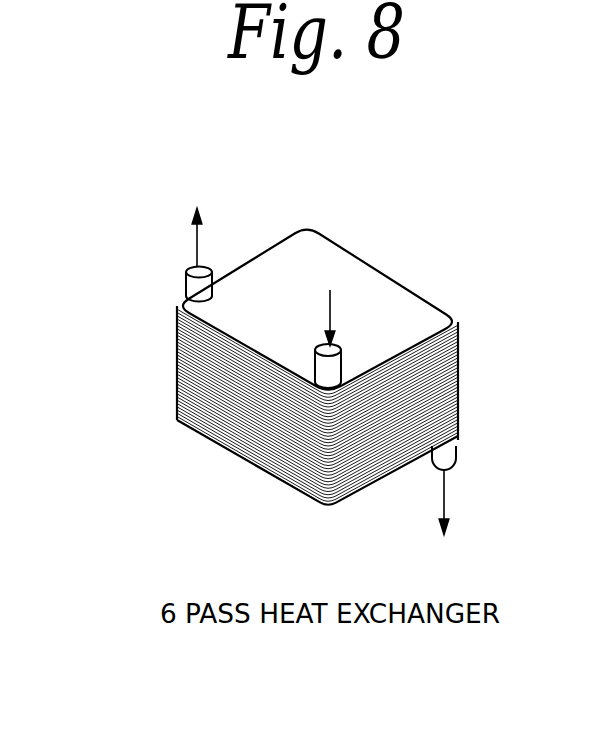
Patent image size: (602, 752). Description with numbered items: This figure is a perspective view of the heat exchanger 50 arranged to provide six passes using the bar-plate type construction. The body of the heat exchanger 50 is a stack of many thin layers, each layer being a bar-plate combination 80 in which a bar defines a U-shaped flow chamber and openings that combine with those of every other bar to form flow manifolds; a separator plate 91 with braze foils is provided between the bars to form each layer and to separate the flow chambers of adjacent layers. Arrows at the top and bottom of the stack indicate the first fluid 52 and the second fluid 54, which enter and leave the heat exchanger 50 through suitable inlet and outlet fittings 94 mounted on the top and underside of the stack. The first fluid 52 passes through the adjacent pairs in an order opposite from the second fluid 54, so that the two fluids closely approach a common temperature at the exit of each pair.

The heat exchanger 50 is at (313, 255).
The first fluid 52 is at (196, 238).
The second fluid 54 is at (330, 310).
The bar-plate combination 80 is at (460, 331).
The separator plate 91 is at (193, 284).
The inlet and outlet fittings 94 is at (343, 362).